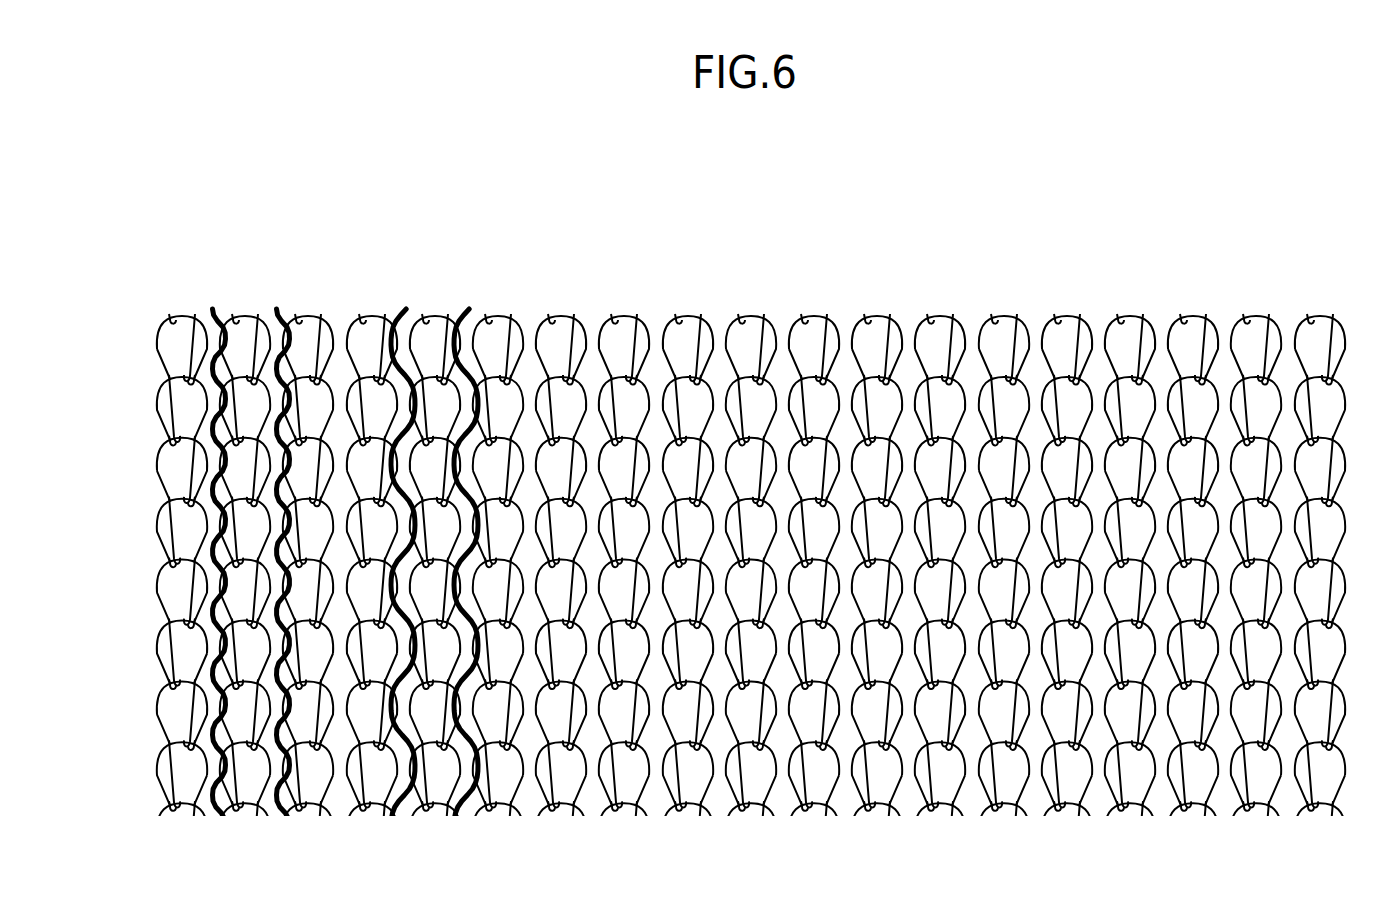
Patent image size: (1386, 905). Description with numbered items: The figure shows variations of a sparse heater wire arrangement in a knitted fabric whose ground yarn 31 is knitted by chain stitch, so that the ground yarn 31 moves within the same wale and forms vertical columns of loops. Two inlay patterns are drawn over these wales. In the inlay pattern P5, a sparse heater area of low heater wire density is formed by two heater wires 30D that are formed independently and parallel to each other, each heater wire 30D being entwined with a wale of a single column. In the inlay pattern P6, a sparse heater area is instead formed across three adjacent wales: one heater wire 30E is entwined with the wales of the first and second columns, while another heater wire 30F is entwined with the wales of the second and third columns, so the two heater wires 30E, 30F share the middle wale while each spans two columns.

The heater wire 30D is at (216, 310).
The heater wire 30E is at (401, 311).
The heater wire 30F is at (465, 311).
The ground yarn 31 is at (338, 338).
The inlay pattern P5 is at (266, 226).
The inlay pattern P6 is at (431, 226).